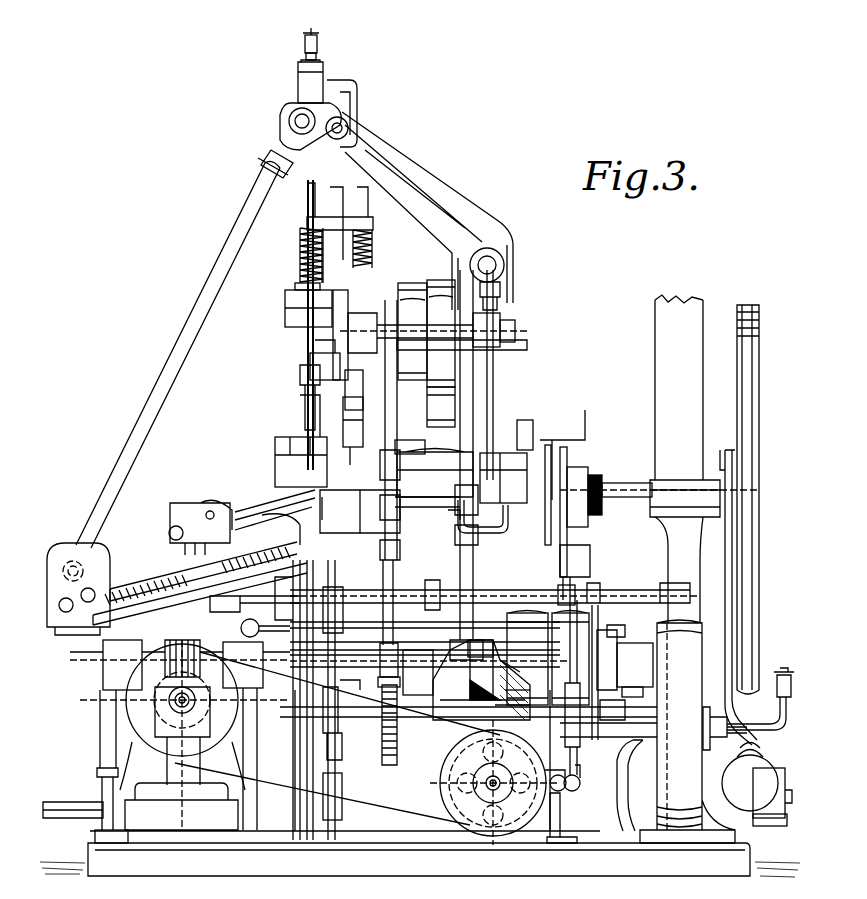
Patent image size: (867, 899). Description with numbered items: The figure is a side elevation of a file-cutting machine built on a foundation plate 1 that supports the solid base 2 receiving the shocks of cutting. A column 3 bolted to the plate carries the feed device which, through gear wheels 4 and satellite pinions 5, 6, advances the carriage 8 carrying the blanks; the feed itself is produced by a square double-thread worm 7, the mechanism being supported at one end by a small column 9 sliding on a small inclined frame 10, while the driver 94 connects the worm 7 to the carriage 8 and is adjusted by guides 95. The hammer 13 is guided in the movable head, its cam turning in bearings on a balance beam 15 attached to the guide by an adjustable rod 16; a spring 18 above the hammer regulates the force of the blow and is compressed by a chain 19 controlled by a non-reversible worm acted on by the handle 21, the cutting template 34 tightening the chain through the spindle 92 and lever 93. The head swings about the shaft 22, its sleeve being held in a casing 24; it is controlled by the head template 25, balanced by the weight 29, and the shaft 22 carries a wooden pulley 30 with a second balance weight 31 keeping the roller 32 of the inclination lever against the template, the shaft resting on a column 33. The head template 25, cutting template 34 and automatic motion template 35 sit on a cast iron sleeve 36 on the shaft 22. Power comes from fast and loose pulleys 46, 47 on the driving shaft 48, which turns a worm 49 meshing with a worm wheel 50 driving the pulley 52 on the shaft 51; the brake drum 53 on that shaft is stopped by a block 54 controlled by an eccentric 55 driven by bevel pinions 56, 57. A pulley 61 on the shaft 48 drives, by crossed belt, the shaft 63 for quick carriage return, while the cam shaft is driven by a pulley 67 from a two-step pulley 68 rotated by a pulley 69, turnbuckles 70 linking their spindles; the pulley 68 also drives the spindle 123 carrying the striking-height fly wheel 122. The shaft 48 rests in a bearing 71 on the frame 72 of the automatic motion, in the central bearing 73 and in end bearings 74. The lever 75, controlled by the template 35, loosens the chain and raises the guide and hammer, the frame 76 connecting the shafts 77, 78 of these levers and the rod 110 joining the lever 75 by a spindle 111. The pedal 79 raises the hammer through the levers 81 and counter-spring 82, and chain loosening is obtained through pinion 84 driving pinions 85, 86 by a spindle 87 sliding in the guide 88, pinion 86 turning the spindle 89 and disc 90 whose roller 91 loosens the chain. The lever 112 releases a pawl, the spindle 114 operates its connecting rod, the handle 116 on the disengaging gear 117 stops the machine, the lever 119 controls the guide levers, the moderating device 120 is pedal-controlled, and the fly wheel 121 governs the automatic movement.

The foundation plate 1 is at (748, 852).
The solid base 2 is at (422, 760).
The column 3 is at (496, 405).
The gear wheels 4 is at (275, 150).
The satellite pinion 5 is at (80, 584).
The satellite pinion 6 is at (84, 618).
The worm 7 is at (140, 580).
The carriage 8 is at (242, 520).
The small column 9 is at (99, 727).
The small frame 10 is at (98, 837).
The hammer 13 is at (306, 352).
The balance beam 15 is at (342, 368).
The adjustable rod 16 is at (362, 417).
The spring 18 is at (298, 247).
The chain 19 is at (308, 305).
The handle 21 is at (298, 402).
The shaft 22 is at (636, 483).
The casing 24 is at (435, 473).
The head template 25 is at (553, 440).
The weight 29 is at (778, 827).
The wooden pulley 30 is at (759, 462).
The second balance weight 31 is at (768, 768).
The roller 32 is at (528, 432).
The column 33 is at (685, 459).
The cutting template 34 is at (551, 452).
The automatic motion template 35 is at (568, 452).
The cast iron sleeve 36 is at (600, 478).
The fast pulley 46 is at (570, 658).
The loose pulley 47 is at (527, 658).
The driving shaft 48 is at (430, 660).
The worm 49 is at (182, 648).
The worm wheel 50 is at (340, 735).
The shaft 51 is at (345, 728).
The pulley 52 is at (493, 783).
The brake drum 53 is at (495, 782).
The block 54 is at (562, 795).
The eccentric 55 is at (574, 687).
The bevel pinion 56 is at (514, 670).
The bevel pinion 57 is at (518, 687).
The pulley 61 is at (608, 637).
The shaft 63 is at (512, 707).
The pulley 67 is at (441, 407).
The two-step pulley 68 is at (426, 333).
The pulley 69 is at (418, 672).
The turnbuckles 70 is at (383, 575).
The bearing 71 is at (626, 681).
The frame 72 is at (624, 785).
The bearing 73 is at (385, 679).
The bearings 74 is at (180, 735).
The lever 75 is at (577, 566).
The frame 76 is at (337, 738).
The shaft 77 is at (400, 725).
The shaft 78 is at (468, 722).
The pedal 79 is at (73, 801).
The levers 81 is at (276, 700).
The counter-spring 82 is at (300, 370).
The pinion 84 is at (481, 680).
The pinion 85 is at (470, 524).
The pinion 86 is at (487, 515).
The spindle 87 is at (473, 617).
The guide 88 is at (482, 642).
The spindle 89 is at (427, 507).
The disc 90 is at (360, 511).
The roller 91 is at (284, 529).
The spindle 92 is at (410, 456).
The lever 93 is at (508, 480).
The driver 94 is at (200, 590).
The guides 95 is at (256, 552).
The rod 110 is at (576, 590).
The spindle 111 is at (495, 592).
The lever 112 is at (223, 604).
The spindle 114 is at (425, 644).
The handle 116 is at (255, 626).
The disengaging gear 117 is at (425, 624).
The lever 119 is at (356, 679).
The moderating device 120 is at (349, 796).
The fly wheel 121 is at (700, 672).
The fly wheel 122 is at (373, 262).
The spindle 123 is at (502, 330).